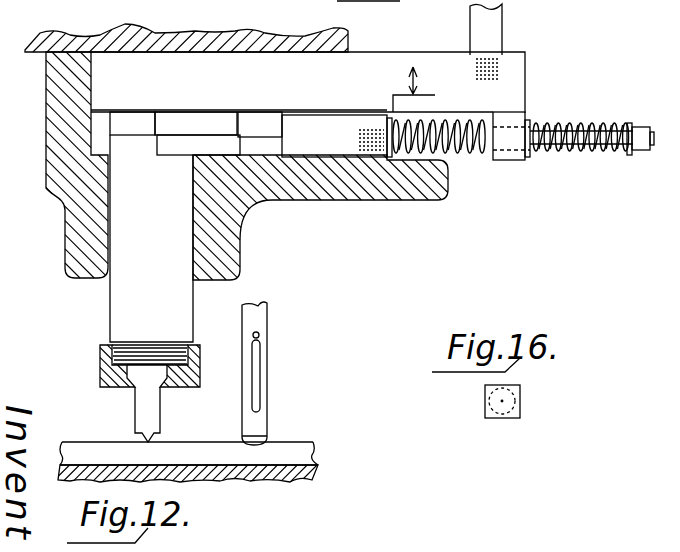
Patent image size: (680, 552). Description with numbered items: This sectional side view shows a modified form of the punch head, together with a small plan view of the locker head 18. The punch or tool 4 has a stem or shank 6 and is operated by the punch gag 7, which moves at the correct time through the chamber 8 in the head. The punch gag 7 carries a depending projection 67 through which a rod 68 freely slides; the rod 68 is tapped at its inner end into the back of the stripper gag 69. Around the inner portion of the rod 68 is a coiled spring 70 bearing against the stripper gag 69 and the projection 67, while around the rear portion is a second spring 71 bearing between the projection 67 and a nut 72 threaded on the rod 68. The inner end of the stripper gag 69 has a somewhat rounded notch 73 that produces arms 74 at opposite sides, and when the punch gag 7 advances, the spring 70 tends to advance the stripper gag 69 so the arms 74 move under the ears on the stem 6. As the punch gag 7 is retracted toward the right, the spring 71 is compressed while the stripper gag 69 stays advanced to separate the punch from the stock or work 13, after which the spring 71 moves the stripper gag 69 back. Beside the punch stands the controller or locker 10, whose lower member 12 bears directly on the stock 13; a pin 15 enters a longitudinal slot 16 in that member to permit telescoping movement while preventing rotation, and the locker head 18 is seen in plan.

In FIG. 12, the punch 4 is at (138, 417).
In FIG. 12, the stem or shank 6 is at (117, 318).
In FIG. 12, the punch gag 7 is at (377, 63).
In FIG. 12, the chamber 8 is at (91, 142).
In FIG. 12, the controller or locker 10 is at (265, 375).
In FIG. 12, the lower member 12 is at (47, 86).
In FIG. 12, the stock or work 13 is at (305, 443).
In FIG. 12, the pin 15 is at (258, 336).
In FIG. 12, the longitudinal slot 16 is at (258, 355).
In FIG. 16, the head of the locker 18 is at (520, 415).
In FIG. 12, the depending projection 67 is at (508, 160).
In FIG. 12, the rod 68 is at (553, 158).
In FIG. 12, the stripper gag 69 is at (323, 145).
In FIG. 12, the coiled spring 70 is at (468, 158).
In FIG. 12, the second spring 71 is at (577, 123).
In FIG. 12, the nut 72 is at (648, 130).
In FIG. 12, the notch 73 is at (243, 157).
In FIG. 12, the arms 74 is at (183, 153).